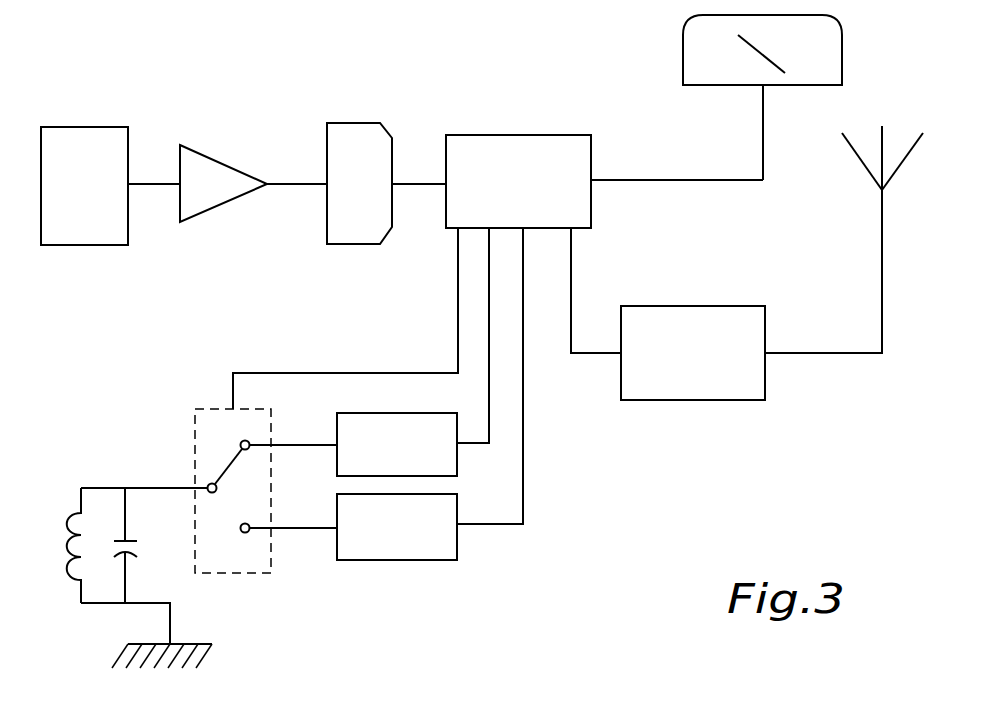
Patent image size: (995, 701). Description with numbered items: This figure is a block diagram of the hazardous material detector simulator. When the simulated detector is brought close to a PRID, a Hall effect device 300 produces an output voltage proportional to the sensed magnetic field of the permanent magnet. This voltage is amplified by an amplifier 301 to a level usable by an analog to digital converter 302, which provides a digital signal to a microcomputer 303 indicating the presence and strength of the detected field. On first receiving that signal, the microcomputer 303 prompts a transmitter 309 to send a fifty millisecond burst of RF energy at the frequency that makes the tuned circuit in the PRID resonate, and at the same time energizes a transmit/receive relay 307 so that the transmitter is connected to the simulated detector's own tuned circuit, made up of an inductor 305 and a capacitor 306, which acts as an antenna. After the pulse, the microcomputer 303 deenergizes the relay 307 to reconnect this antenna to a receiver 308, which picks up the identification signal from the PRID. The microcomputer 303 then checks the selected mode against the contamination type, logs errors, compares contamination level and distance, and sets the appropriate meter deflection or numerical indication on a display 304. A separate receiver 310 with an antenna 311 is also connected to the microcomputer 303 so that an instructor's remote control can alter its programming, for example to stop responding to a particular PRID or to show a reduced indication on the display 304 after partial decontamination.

The Hall effect device 300 is at (66, 180).
The amplifier 301 is at (186, 195).
The analog to digital converter 302 is at (338, 193).
The microcomputer 303 is at (498, 193).
The display 304 is at (842, 40).
The inductor 305 is at (80, 530).
The capacitor 306 is at (130, 553).
The transmit/receive relay 307 is at (212, 408).
The receiver 308 is at (375, 458).
The transmitter 309 is at (375, 541).
The receiver 310 is at (670, 365).
The antenna 311 is at (850, 147).